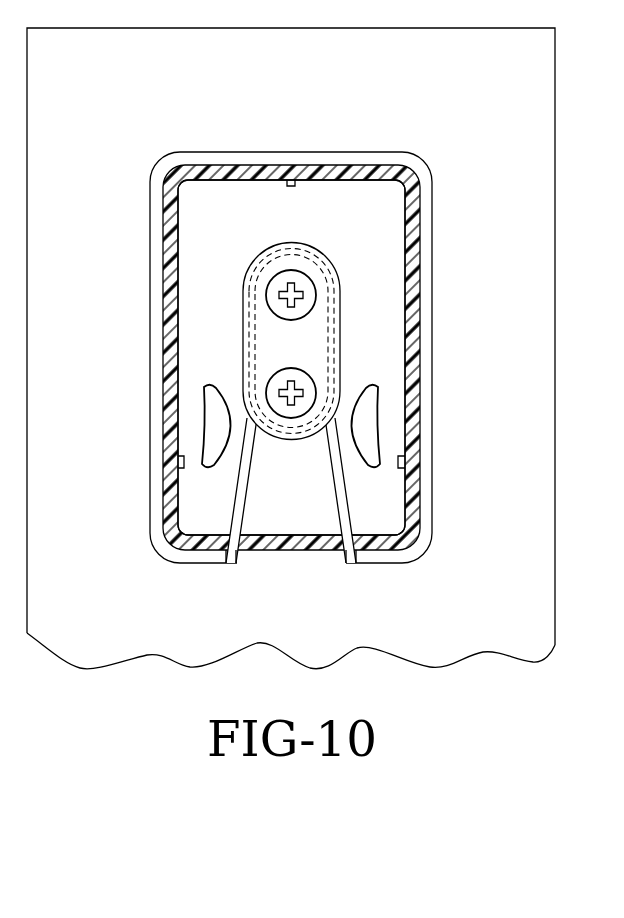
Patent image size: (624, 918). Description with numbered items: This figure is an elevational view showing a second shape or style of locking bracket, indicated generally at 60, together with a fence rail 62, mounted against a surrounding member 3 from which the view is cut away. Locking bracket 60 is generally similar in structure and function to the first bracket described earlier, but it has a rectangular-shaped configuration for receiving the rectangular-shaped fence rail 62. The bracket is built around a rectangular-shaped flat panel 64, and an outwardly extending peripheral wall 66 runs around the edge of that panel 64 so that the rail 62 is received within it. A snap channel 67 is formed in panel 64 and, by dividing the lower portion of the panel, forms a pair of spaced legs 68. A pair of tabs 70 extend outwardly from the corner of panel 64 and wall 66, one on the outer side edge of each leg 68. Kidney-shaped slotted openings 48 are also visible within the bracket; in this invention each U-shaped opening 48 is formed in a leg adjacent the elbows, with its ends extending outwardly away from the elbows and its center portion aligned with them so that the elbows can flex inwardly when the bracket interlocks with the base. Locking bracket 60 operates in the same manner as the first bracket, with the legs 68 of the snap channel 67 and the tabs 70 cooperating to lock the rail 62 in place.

The panel 3 is at (530, 600).
The locking bracket 60 is at (297, 351).
The fence rail 62 is at (408, 327).
The flat panel 64 is at (375, 272).
The peripheral wall 66 is at (427, 375).
The slotted opening 48 is at (372, 435).
The snap channel 67 is at (283, 514).
The legs 68 is at (205, 515).
The tabs 70 is at (184, 458).